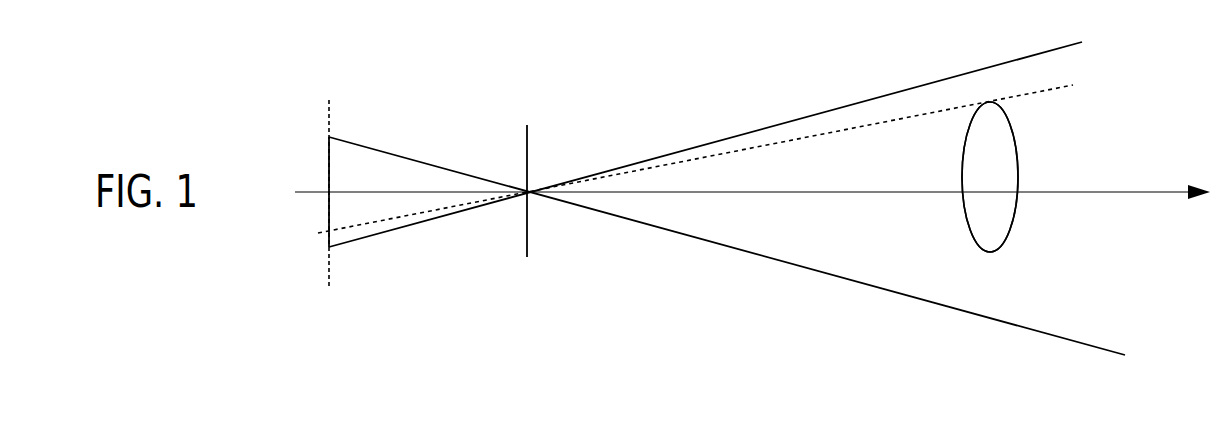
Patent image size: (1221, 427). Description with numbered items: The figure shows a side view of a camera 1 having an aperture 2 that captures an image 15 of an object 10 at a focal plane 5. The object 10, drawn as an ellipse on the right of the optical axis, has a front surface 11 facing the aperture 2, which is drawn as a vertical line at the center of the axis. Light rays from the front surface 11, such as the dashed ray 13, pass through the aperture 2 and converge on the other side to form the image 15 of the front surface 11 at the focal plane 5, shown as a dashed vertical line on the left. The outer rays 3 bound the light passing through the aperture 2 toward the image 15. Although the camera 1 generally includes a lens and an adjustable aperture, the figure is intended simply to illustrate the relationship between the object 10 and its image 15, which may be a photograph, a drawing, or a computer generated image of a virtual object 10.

The camera 1 is at (505, 104).
The aperture 2 is at (526, 187).
The marginal rays 3 is at (1063, 45).
The focal plane 5 is at (333, 121).
The object 10 is at (1001, 187).
The front surface 11 is at (962, 190).
The ray 13 is at (1054, 89).
The image 15 is at (328, 176).